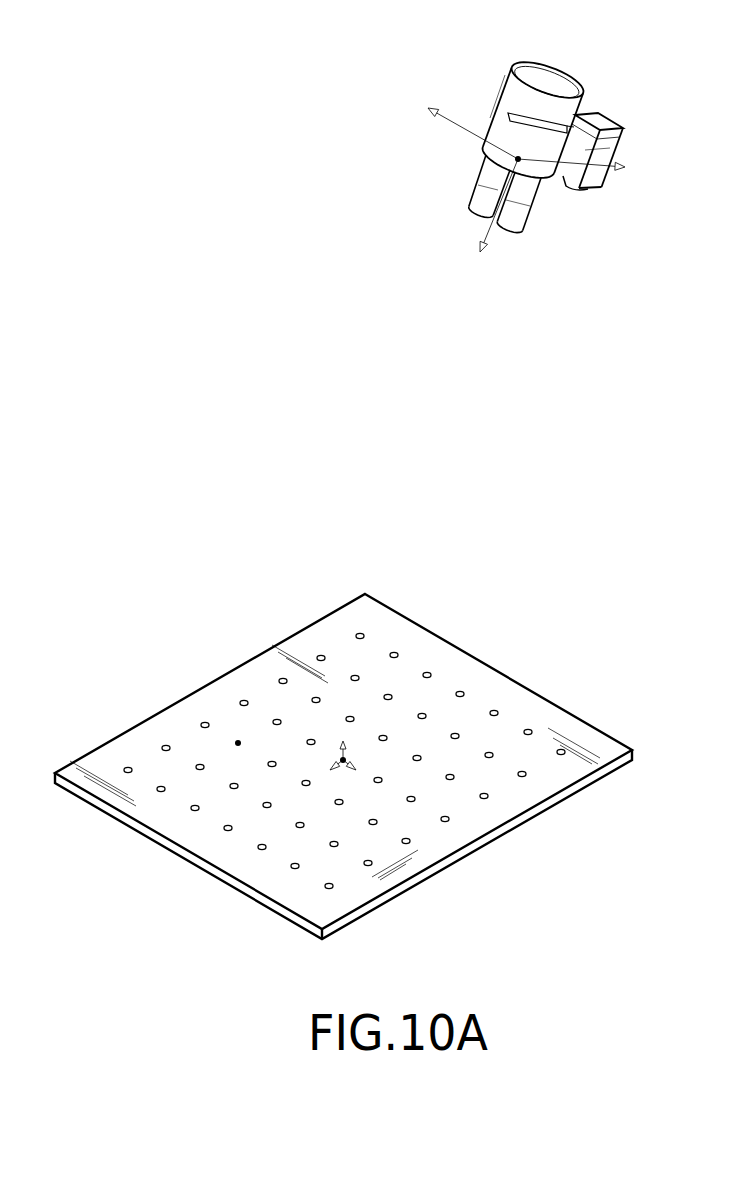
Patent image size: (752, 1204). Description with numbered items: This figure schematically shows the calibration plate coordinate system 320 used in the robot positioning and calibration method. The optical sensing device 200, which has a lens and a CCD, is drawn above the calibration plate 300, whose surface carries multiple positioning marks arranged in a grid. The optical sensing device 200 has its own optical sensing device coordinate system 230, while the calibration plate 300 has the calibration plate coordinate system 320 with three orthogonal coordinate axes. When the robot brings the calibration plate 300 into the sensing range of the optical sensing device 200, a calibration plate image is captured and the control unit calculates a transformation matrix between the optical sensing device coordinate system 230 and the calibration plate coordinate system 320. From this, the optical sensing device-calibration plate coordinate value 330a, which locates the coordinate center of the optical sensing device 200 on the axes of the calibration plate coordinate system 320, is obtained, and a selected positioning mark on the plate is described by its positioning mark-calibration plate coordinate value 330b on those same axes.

The optical sensing device 200 is at (513, 166).
The optical sensing device coordinate system 230 is at (490, 226).
The optical sensing device-calibration plate coordinate value 330a is at (516, 159).
The calibration plate 300 is at (343, 738).
The positioning mark-calibration plate coordinate value 330b is at (238, 741).
The calibration plate coordinate system 320 is at (347, 760).